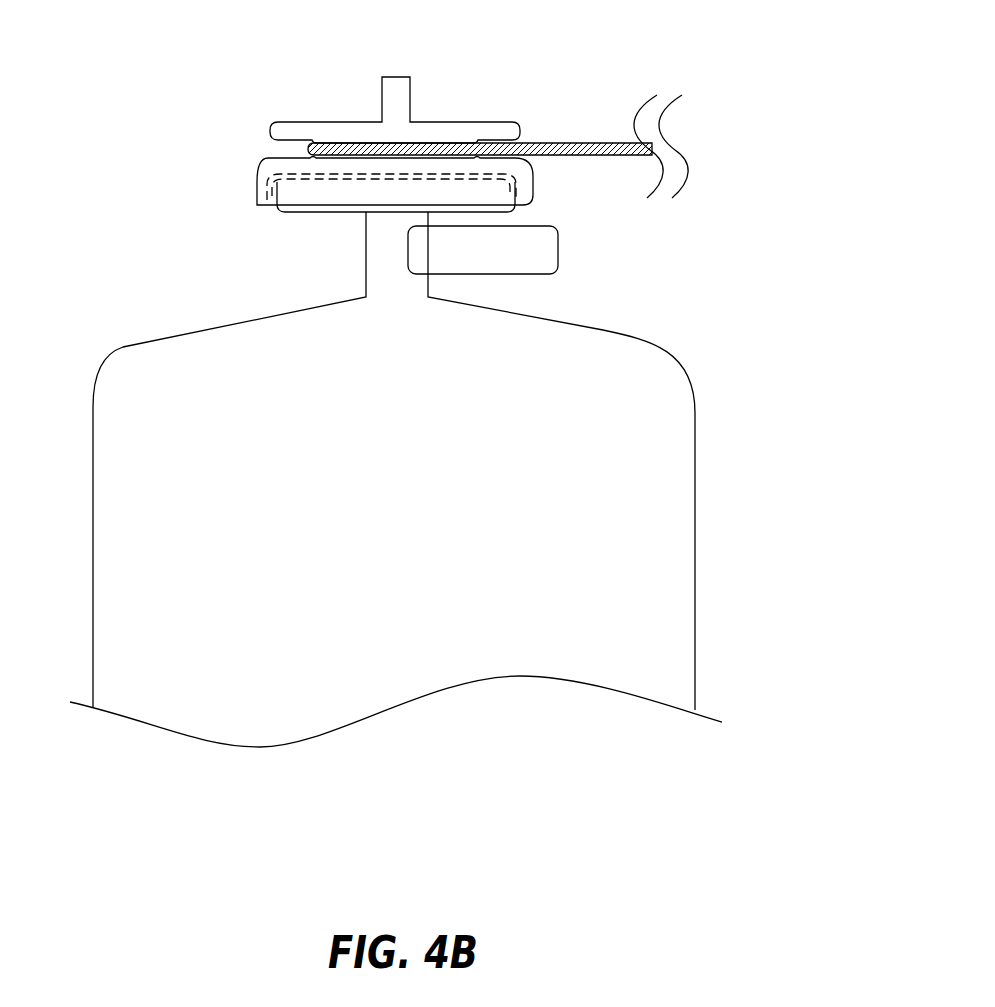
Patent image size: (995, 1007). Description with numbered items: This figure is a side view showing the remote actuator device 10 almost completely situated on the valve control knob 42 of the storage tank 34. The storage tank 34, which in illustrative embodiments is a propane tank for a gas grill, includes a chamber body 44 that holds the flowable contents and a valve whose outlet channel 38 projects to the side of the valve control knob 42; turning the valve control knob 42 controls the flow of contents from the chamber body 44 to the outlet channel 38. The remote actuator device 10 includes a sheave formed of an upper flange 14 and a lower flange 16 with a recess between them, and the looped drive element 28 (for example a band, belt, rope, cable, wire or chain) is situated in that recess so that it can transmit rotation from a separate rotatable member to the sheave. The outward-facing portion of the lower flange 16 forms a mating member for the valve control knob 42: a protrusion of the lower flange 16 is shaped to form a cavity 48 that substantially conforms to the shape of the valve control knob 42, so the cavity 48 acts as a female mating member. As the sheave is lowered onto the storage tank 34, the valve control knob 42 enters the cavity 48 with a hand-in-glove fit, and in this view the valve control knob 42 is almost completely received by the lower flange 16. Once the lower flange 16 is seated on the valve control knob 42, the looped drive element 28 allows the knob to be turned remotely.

The remote actuator device 10 is at (232, 65).
The upper flange 14 is at (345, 122).
The looped drive element 28 is at (550, 142).
The cavity 48 is at (270, 175).
The lower flange 16 is at (533, 170).
The valve control knob 42 is at (290, 218).
The storage tank 34 is at (95, 255).
The outlet channel 38 is at (560, 250).
The chamber body 44 is at (688, 535).